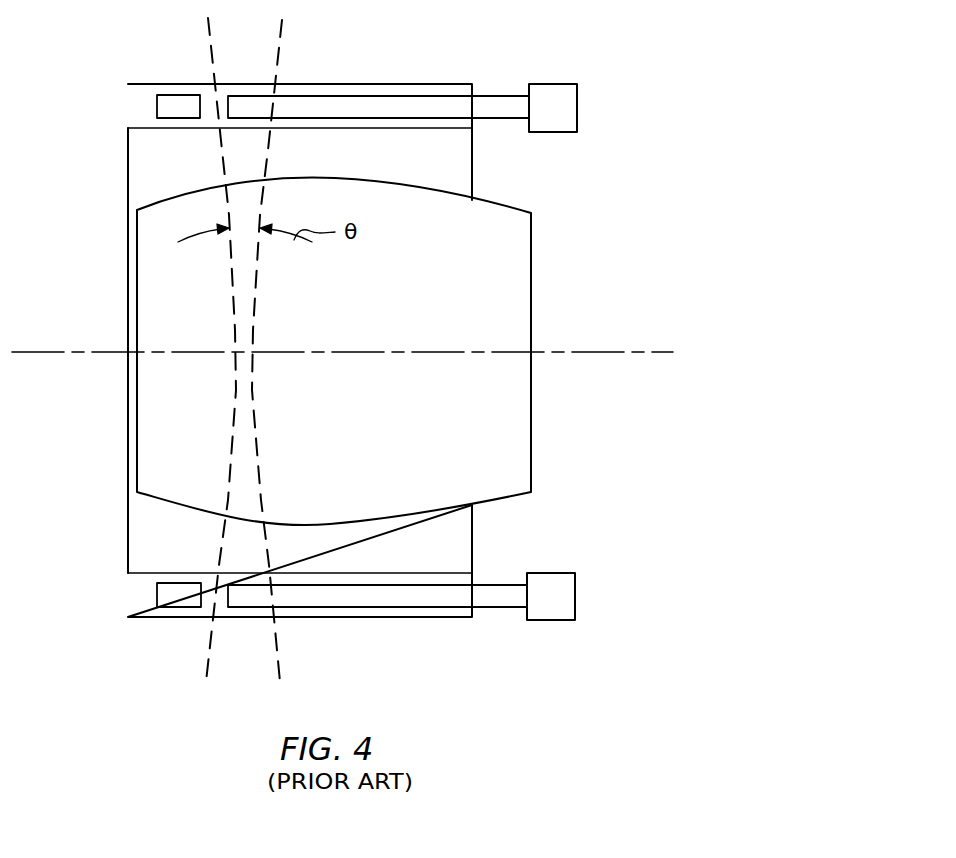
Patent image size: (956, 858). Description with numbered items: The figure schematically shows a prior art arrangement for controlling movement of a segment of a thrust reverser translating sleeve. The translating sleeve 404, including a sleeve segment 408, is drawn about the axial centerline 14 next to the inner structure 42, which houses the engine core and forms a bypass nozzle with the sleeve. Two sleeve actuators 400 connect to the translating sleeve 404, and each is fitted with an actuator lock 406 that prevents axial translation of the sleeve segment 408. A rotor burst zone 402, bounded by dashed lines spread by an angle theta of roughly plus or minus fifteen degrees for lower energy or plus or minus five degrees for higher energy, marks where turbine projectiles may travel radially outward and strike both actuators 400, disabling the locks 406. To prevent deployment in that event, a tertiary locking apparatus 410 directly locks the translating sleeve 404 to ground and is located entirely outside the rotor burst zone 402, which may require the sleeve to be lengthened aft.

The axial centerline 14 is at (628, 353).
The inner structure 42 is at (508, 497).
The sleeve actuator 400 is at (497, 95).
The rotor burst zone 402 is at (279, 53).
The translating sleeve 404 is at (128, 548).
The actuator lock 406 is at (577, 104).
The sleeve segment 408 is at (128, 508).
The tertiary locking apparatus 410 is at (171, 94).